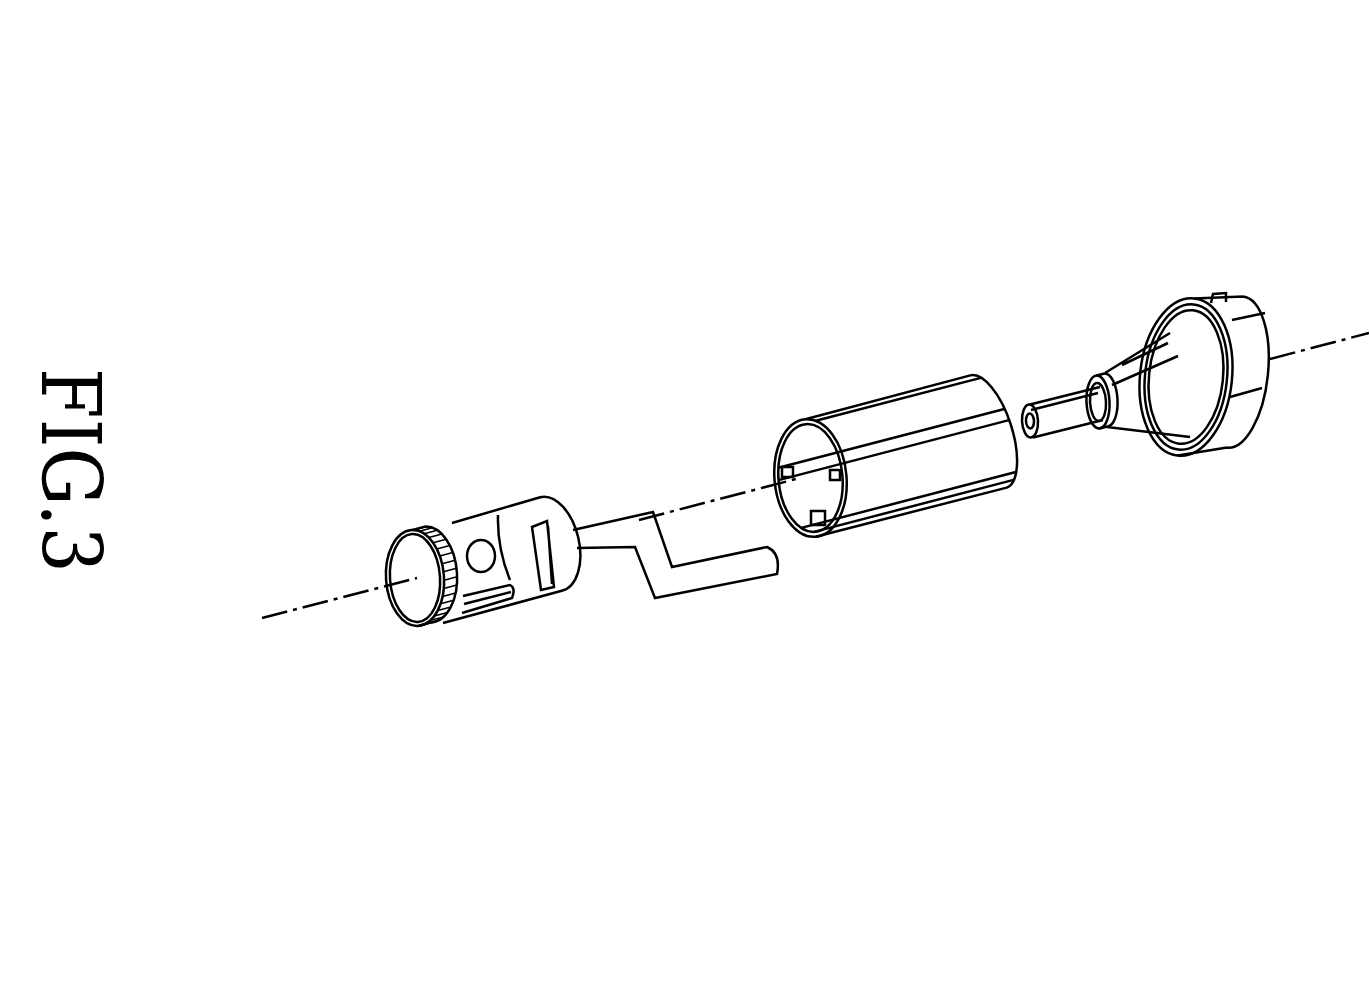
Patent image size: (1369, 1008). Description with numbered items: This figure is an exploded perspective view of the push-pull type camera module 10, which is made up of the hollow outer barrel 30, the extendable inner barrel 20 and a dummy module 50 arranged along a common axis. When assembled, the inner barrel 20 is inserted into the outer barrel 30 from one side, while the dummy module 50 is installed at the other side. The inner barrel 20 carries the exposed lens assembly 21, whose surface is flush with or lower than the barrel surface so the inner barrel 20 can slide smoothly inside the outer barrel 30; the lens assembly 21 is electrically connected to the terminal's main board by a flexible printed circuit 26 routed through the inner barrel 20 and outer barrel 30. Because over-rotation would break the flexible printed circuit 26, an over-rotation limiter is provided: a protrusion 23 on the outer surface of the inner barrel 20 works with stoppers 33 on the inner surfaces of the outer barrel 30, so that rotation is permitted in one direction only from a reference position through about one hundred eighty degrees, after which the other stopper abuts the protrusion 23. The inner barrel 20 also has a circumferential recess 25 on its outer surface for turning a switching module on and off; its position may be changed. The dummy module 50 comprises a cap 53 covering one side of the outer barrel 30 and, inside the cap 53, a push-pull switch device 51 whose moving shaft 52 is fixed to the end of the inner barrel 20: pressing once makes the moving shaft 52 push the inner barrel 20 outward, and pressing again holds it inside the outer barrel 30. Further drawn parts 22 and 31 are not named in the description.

The push-pull type camera module 10 is at (655, 280).
The inner barrel 20 is at (450, 508).
The lens assembly 21 is at (479, 559).
The knurled cap 22 is at (425, 613).
The protrusion 23 is at (460, 612).
The recess 25 is at (562, 592).
The flexible printed circuit (FPC) 26 is at (710, 578).
The outer barrel 30 is at (905, 395).
The sleeve opening 31 is at (810, 525).
The stoppers 33 is at (830, 470).
The dummy module 50 is at (1125, 308).
The push-pull switch device 51 is at (1140, 425).
The moving shaft 52 is at (1064, 432).
The cap 53 is at (1200, 292).